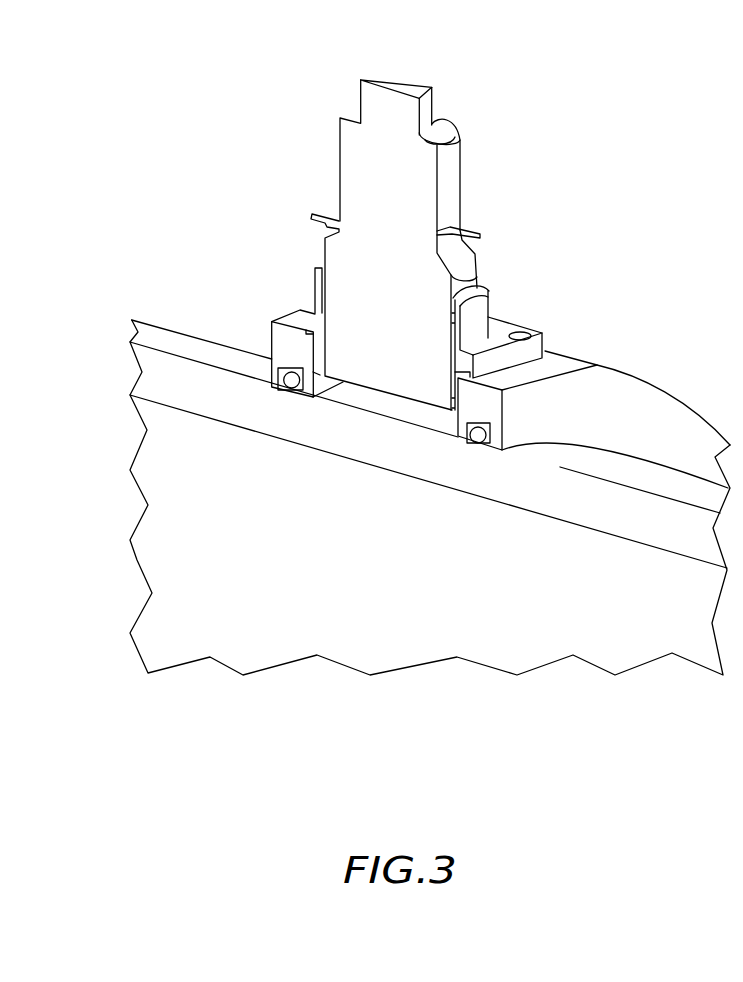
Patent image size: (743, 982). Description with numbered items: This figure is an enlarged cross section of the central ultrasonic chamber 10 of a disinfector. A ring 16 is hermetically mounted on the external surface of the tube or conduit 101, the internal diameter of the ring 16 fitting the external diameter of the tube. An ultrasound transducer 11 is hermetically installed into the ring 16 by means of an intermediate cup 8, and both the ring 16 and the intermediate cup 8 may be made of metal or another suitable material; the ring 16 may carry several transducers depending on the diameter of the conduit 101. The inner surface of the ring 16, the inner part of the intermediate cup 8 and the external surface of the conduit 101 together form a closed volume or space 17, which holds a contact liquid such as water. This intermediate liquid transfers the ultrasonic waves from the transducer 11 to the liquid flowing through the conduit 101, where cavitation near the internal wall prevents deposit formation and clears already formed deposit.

The intermediate cup 8 is at (502, 325).
The central ultrasonic chamber 10 is at (292, 322).
The ultrasound transducer 11 is at (397, 120).
The ring 16 is at (607, 405).
The closed volume or space 17 is at (417, 413).
The tube or conduit 101 is at (183, 380).